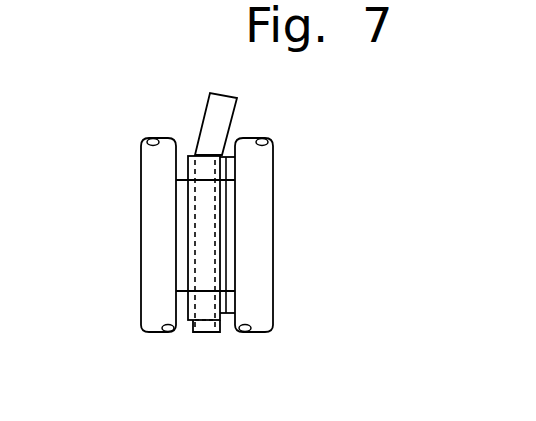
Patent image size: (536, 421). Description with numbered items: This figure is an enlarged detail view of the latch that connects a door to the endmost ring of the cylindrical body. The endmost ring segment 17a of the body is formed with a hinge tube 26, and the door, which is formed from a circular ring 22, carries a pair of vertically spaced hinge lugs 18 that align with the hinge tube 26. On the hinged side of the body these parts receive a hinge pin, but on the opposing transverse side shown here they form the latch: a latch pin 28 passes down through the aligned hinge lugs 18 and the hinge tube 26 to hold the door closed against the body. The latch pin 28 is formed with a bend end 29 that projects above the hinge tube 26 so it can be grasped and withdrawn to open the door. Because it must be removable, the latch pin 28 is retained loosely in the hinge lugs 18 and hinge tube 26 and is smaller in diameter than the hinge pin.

The endmost ring segment 17a is at (160, 200).
The hinge lugs 18 is at (210, 168).
The circular ring 22 is at (267, 262).
The hinge tube 26 is at (207, 255).
The latch pin 28 is at (205, 333).
The bend end 29 is at (217, 118).